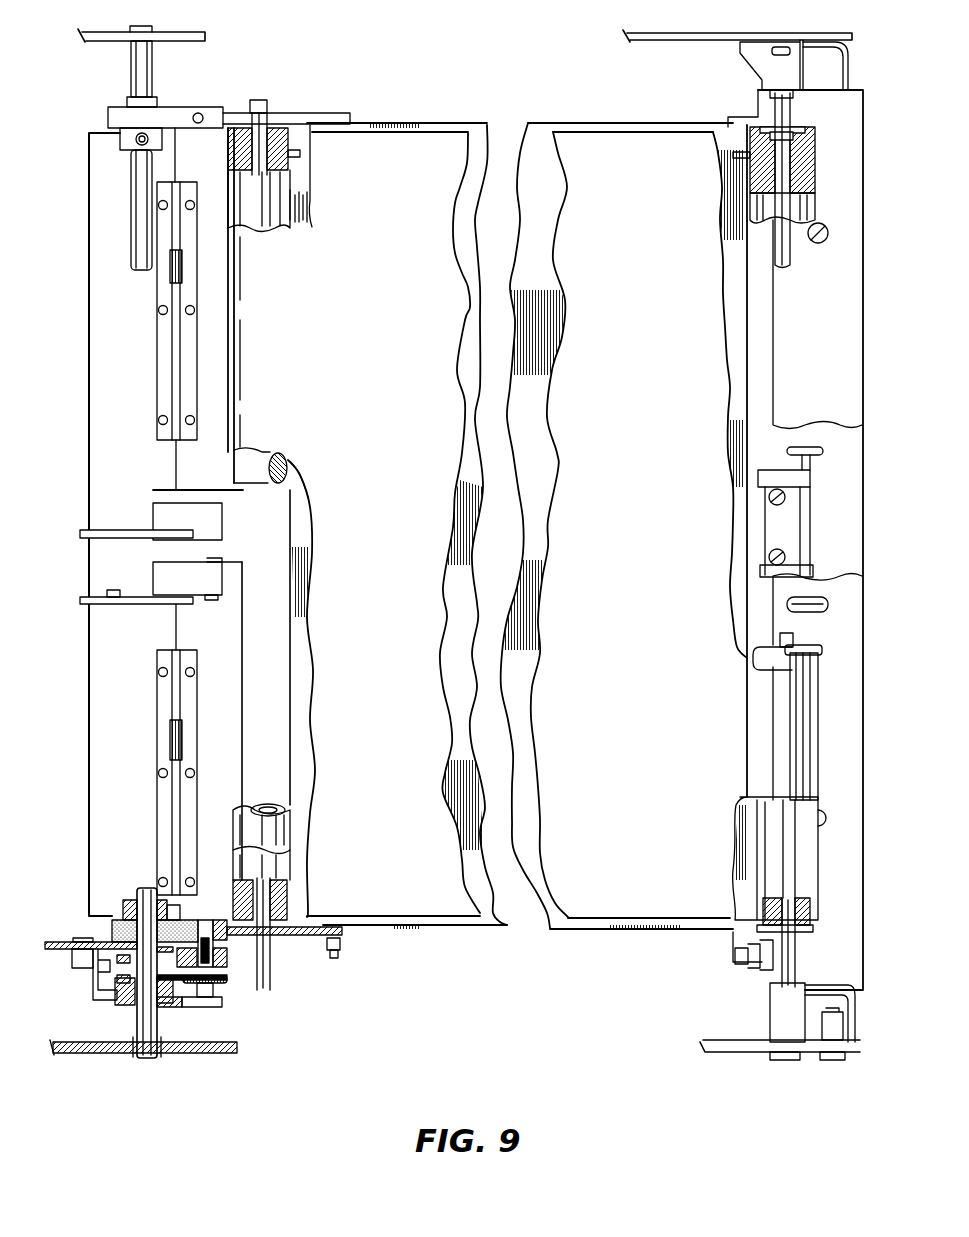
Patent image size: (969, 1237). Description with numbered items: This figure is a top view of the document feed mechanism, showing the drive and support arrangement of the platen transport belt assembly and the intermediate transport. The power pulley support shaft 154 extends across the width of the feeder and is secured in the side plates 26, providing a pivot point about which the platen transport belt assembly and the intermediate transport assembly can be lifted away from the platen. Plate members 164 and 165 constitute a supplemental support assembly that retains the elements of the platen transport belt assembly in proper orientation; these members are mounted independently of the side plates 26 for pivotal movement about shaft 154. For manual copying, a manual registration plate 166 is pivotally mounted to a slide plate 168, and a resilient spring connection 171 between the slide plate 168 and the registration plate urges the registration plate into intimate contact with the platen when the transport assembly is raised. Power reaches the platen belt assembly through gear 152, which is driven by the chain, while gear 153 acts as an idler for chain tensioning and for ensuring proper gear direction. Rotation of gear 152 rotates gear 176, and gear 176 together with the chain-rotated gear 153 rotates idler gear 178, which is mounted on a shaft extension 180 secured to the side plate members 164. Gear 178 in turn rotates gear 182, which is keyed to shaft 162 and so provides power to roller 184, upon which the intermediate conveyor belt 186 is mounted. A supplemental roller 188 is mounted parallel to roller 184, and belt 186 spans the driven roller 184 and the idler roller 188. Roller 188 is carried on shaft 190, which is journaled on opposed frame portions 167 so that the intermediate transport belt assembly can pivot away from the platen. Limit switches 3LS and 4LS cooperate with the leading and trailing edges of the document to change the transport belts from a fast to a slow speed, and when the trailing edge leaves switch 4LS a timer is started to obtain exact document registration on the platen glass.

The side plates 26 is at (178, 32).
The gear 152 is at (115, 998).
The idler gear 153 is at (222, 985).
The power pulley support shaft 154 is at (133, 238).
The shafts 162 is at (232, 150).
The plate member 164 is at (110, 935).
The plate member 165 is at (350, 100).
The manual registration plate 166 is at (243, 633).
The frame portions 167 is at (736, 114).
The slide plate 168 is at (85, 762).
The resilient spring connection 171 is at (157, 377).
The gear 176 is at (100, 970).
The idler gear 178 is at (235, 970).
The shaft extension 180 is at (230, 924).
The gear 182 is at (292, 958).
The roller 184 is at (235, 812).
The intermediate conveyor belt 186 is at (492, 923).
The supplemental roller 188 is at (817, 860).
The shaft 190 is at (795, 956).
The limit switch 3LS is at (224, 565).
The limit switch 4LS is at (153, 496).